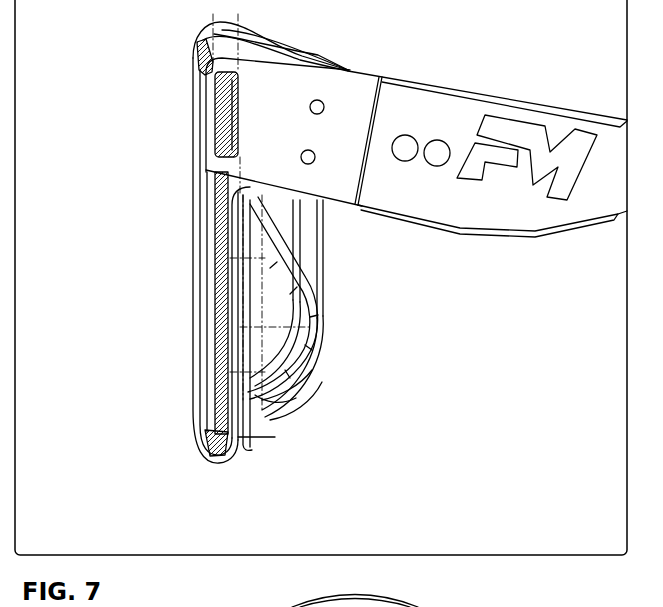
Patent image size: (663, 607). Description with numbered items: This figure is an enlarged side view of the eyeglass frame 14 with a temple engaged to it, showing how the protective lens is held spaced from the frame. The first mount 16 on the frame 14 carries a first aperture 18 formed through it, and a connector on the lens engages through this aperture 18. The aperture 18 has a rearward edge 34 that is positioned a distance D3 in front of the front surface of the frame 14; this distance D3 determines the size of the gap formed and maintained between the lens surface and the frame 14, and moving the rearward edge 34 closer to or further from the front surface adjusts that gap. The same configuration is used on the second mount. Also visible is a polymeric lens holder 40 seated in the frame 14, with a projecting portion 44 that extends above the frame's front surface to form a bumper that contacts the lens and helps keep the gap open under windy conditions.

The frame 14 is at (425, 92).
The first mount 16 is at (327, 82).
The first aperture 18 is at (230, 100).
The rearward edge 34 is at (236, 117).
The lens holder 40 is at (207, 440).
The projecting portion 44 is at (200, 53).
The distance D3 is at (227, 97).